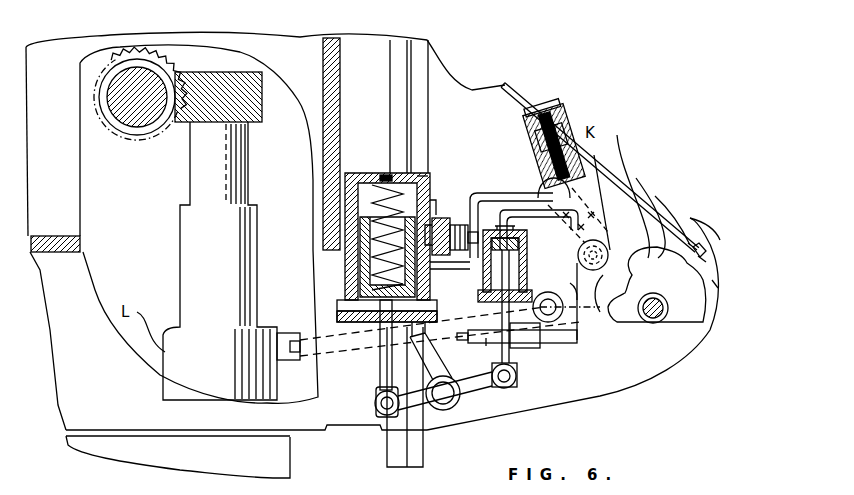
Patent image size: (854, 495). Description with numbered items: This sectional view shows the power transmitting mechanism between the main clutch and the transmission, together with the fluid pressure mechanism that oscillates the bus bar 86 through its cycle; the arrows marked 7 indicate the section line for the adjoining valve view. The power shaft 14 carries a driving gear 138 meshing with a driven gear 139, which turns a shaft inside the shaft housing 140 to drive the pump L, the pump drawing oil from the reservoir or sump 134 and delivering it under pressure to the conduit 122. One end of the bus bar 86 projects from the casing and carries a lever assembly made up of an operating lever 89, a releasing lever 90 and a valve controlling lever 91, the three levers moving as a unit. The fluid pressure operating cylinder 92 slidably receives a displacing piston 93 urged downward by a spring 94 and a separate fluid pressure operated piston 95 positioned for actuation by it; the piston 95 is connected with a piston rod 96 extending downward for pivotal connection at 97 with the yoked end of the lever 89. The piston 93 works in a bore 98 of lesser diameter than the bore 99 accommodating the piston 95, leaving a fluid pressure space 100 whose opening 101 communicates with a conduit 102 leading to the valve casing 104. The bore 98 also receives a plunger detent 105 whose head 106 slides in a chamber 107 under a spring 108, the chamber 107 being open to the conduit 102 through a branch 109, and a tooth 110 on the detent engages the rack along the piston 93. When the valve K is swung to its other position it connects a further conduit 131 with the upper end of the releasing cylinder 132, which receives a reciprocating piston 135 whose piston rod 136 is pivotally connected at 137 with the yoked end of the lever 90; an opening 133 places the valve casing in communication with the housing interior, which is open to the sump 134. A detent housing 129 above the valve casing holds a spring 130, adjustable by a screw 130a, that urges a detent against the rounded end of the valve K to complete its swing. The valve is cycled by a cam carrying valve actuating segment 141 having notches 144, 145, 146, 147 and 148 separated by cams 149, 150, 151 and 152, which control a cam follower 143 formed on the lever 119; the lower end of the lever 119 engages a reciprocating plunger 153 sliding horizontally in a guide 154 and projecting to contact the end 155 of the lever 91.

The section line for FIG. 7 is at (512, 110).
The power shaft 14 is at (135, 125).
The bus bar 86 is at (457, 405).
The operating lever 89 is at (425, 420).
The releasing lever 90 is at (475, 397).
The valve controlling lever 91 is at (440, 375).
The fluid pressure operating cylinder 92 is at (436, 200).
The displacing piston 93 is at (358, 230).
The spring 94 is at (384, 182).
The fluid pressure operated piston 95 is at (362, 296).
The piston rod 96 is at (380, 372).
The pivotal connection 97 is at (376, 403).
The bore 98 is at (356, 200).
The bore 99 is at (358, 270).
The fluid pressure space 100 is at (355, 258).
The opening 101 is at (450, 266).
The conduit 102 is at (430, 272).
The valve casing 104 is at (620, 170).
The plunger detent 105 is at (437, 215).
The head 106 is at (500, 212).
The chamber 107 is at (437, 217).
The spring 108 is at (432, 252).
The branch 109 is at (474, 196).
The tooth 110 is at (418, 176).
The lever 119 is at (517, 272).
The conduit 122 is at (287, 340).
The detent housing 129 is at (565, 118).
The spring 130 is at (568, 140).
The screw 130a is at (532, 106).
The conduit 131 is at (594, 155).
The releasing cylinder 132 is at (527, 243).
The opening 133 is at (605, 215).
The oil reservoir or sump 134 is at (292, 470).
The reciprocating piston 135 is at (577, 290).
The piston rod 136 is at (503, 337).
The pivotal connection 137 is at (517, 377).
The driving gear 138 is at (130, 52).
The driven gear 139 is at (220, 85).
The shaft housing 140 is at (183, 230).
The valve actuating segment 141 is at (705, 328).
The cam follower 143 is at (590, 350).
The notch 144 is at (660, 240).
The notch 145 is at (637, 205).
The notch 146 is at (627, 327).
The notch 147 is at (706, 310).
The notch 148 is at (700, 262).
The cam 149 is at (645, 218).
The cam 150 is at (557, 293).
The cam 151 is at (692, 245).
The cam 152 is at (716, 285).
The reciprocating plunger 153 is at (580, 393).
The guide 154 is at (486, 340).
The end 155 is at (428, 345).